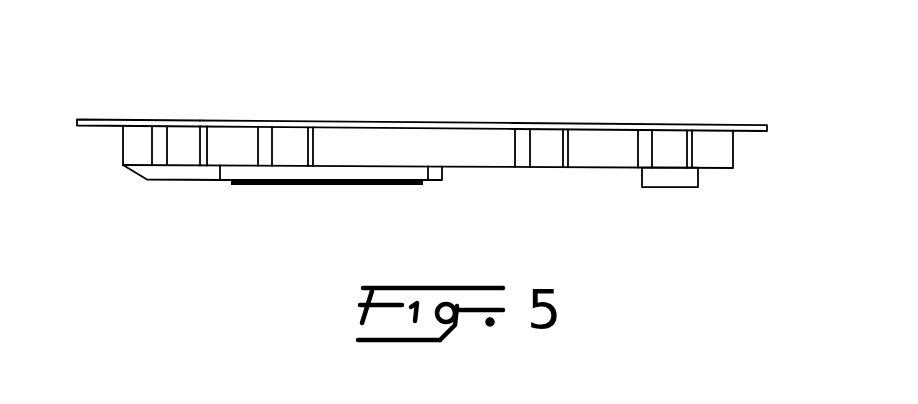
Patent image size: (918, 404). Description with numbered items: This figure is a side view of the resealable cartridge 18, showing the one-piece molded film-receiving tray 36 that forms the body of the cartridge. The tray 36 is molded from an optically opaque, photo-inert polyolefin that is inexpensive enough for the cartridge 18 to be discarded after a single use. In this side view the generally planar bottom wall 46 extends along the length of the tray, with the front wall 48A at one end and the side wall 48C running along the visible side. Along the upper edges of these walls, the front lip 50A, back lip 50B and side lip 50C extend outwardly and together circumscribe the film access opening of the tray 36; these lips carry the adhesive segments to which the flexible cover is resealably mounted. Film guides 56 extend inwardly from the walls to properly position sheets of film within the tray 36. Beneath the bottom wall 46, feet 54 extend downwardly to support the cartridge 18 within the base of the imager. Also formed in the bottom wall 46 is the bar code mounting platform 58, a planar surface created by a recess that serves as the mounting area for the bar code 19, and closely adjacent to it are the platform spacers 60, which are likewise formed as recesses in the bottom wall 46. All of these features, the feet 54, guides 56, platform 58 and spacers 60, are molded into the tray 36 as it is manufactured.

The resealable cartridge 18 is at (677, 72).
The bar code 19 is at (279, 187).
The film-receiving tray 36 is at (733, 155).
The bottom wall 46 is at (488, 168).
The front wall 48A is at (120, 142).
The side wall 48C is at (438, 142).
The front lip 50A is at (95, 119).
The back lip 50B is at (752, 125).
The side lip 50C is at (367, 120).
The feet 54 is at (193, 176).
The film guides 56 is at (290, 137).
The bar code mounting platform 58 is at (363, 173).
The platform spacers 60 is at (412, 172).